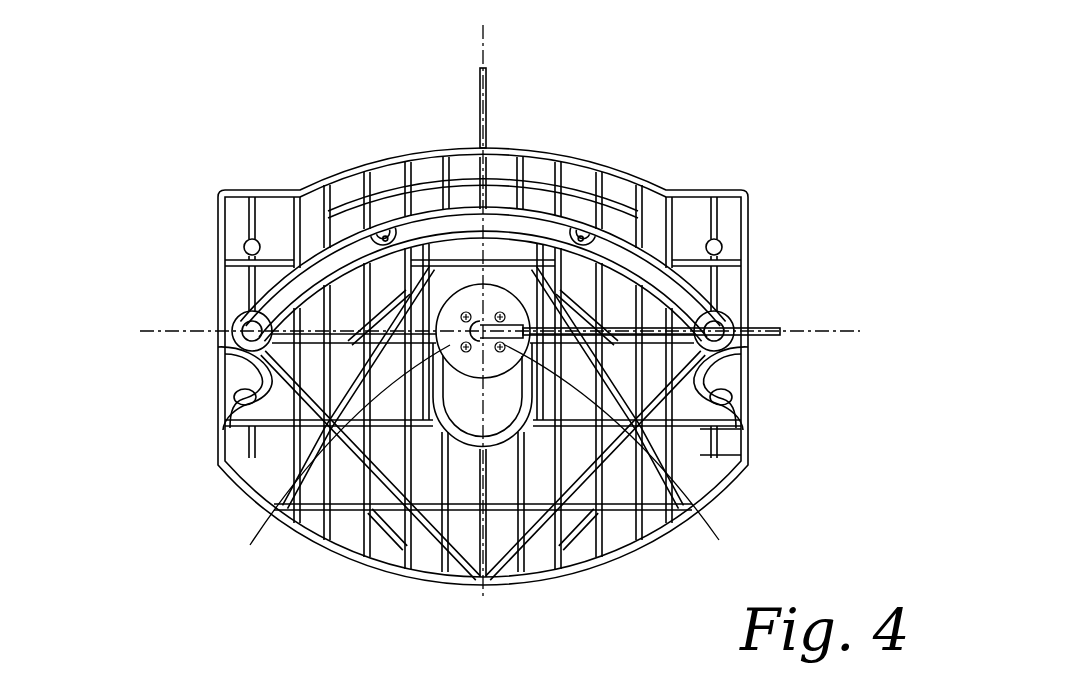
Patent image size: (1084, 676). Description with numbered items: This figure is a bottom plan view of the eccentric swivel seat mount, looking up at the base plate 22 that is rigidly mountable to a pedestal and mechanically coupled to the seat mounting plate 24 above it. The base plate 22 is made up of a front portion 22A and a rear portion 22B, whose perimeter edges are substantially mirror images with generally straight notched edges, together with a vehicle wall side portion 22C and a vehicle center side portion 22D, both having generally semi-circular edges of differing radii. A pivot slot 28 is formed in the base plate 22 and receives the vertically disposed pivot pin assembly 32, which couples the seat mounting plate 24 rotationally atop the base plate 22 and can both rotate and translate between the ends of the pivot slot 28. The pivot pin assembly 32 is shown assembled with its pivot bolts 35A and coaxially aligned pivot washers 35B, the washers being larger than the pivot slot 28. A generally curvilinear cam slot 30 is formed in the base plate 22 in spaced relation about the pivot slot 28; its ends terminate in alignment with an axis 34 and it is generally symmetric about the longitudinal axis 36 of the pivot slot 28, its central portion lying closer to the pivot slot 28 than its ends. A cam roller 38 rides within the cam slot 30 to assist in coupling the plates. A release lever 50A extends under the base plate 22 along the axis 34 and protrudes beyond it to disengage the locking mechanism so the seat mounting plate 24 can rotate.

The base plate 22 is at (747, 193).
The front portion 22A is at (732, 448).
The rear portion 22B is at (240, 445).
The vehicle wall side portion 22C is at (353, 520).
The vehicle center side portion 22D is at (543, 150).
The seat mounting plate 24 is at (240, 375).
The pivot slot 28 is at (500, 428).
The cam slot 30 is at (638, 260).
The pivot pin assembly 32 is at (467, 297).
The axis 34 is at (167, 330).
The pivot bolts 35A is at (633, 450).
The pivot washers 35B is at (332, 461).
The longitudinal axis 36 is at (482, 43).
The cam roller 38 is at (247, 320).
The release lever 50A is at (767, 337).